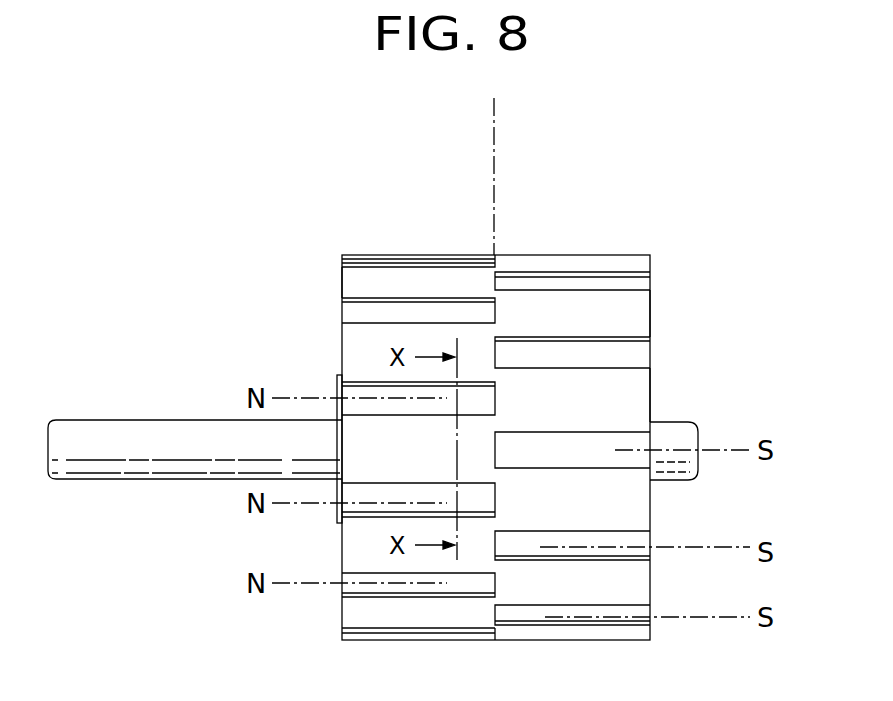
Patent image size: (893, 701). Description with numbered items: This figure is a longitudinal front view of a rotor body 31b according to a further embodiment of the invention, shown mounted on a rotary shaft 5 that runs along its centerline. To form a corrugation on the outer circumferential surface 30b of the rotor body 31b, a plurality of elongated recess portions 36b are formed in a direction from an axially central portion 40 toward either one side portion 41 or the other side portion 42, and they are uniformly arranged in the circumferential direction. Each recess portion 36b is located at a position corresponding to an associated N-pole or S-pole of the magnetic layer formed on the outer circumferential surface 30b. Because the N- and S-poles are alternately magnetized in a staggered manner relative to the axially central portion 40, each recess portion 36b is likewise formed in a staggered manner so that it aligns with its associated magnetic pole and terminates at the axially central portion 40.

The rotary shaft 5 is at (122, 420).
The axially central portion 40 is at (494, 125).
The outer circumferential surface 30b is at (604, 255).
The side portion 41 is at (342, 289).
The elongated recess portion 36b is at (382, 318).
The rotor body 31b is at (652, 311).
The side portion 42 is at (650, 384).